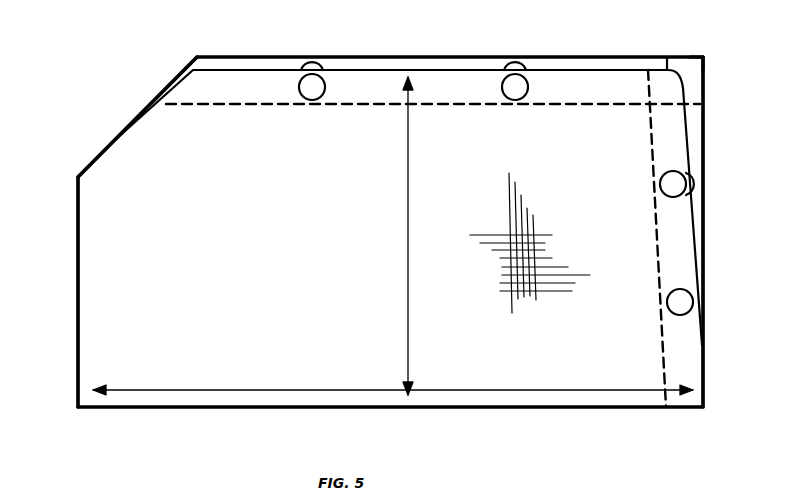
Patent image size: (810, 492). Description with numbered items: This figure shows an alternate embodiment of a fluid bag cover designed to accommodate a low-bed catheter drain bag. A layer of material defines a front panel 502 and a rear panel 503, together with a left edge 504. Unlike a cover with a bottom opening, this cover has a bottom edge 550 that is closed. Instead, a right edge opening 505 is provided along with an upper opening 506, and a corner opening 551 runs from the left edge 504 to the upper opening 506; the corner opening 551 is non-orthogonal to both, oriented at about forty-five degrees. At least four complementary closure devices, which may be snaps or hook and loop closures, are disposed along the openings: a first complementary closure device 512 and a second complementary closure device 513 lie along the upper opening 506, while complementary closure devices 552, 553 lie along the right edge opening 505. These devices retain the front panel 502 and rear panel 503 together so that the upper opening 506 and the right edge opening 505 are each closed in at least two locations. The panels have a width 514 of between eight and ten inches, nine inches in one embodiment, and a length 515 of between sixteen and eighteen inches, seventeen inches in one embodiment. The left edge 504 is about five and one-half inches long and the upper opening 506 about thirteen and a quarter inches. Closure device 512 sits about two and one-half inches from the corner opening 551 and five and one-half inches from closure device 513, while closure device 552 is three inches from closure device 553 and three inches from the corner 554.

The front panel 502 is at (133, 303).
The rear panel 503 is at (590, 57).
The left edge 504 is at (78, 275).
The right edge opening 505 is at (697, 134).
The upper opening 506 is at (427, 57).
The first complementary closure device 512 is at (312, 88).
The second complementary closure device 513 is at (515, 88).
The width 514 is at (408, 290).
The length 515 is at (218, 388).
The bottom edge 550 is at (238, 410).
The corner opening 551 is at (115, 137).
The complementary closure device 552 is at (672, 184).
The complementary closure device 553 is at (682, 302).
The corner 554 is at (703, 57).